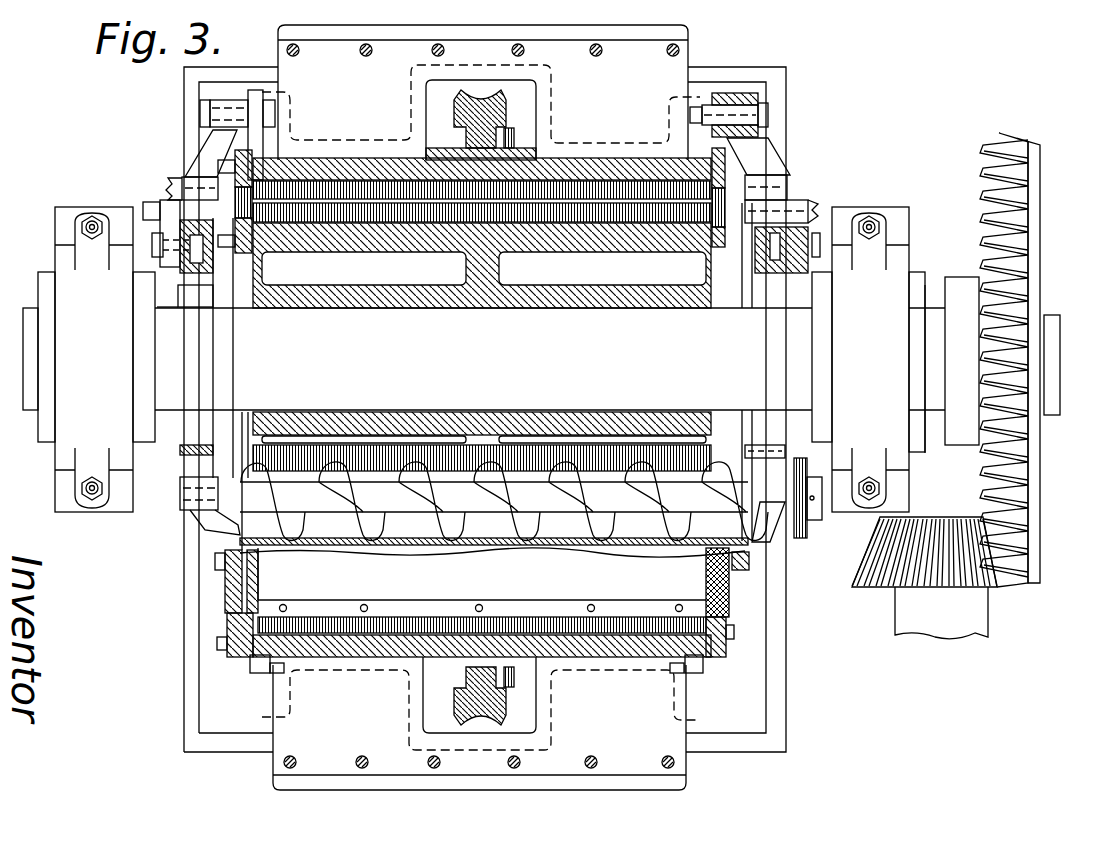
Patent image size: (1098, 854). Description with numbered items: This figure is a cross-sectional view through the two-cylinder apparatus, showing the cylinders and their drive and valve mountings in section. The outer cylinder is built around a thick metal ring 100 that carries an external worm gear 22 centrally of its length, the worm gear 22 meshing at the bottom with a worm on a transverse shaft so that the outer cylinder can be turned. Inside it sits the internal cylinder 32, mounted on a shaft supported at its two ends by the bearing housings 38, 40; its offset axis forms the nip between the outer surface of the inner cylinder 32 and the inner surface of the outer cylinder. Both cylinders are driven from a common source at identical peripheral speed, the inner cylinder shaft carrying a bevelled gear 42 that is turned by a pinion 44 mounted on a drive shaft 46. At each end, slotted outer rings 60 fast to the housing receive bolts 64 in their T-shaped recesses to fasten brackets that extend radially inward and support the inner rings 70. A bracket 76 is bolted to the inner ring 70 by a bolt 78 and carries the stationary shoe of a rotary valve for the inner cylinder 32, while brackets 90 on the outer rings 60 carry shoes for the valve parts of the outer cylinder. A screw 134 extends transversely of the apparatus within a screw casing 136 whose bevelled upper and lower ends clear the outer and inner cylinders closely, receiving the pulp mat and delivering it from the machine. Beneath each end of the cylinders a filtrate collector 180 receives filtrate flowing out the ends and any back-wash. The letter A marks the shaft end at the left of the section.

The external worm gear 22 is at (497, 118).
The internal cylinder 32 is at (358, 233).
The bearing housing 38 is at (68, 430).
The bearing housing 40 is at (898, 268).
The bevelled gear 42 is at (1012, 548).
The pinion 44 is at (868, 577).
The drive shaft 46 is at (967, 615).
The slotted outer ring 60 is at (262, 95).
The bolt 64 is at (200, 108).
The inner ring 70 is at (205, 270).
The bracket 76 is at (168, 210).
The bolt 78 is at (150, 245).
The bracket 90 is at (208, 157).
The thick metal ring 100 is at (305, 170).
The screw 134 is at (452, 523).
The screw casing 136 is at (622, 547).
The filtrate collector 180 is at (780, 675).
The section line A is at (28, 345).